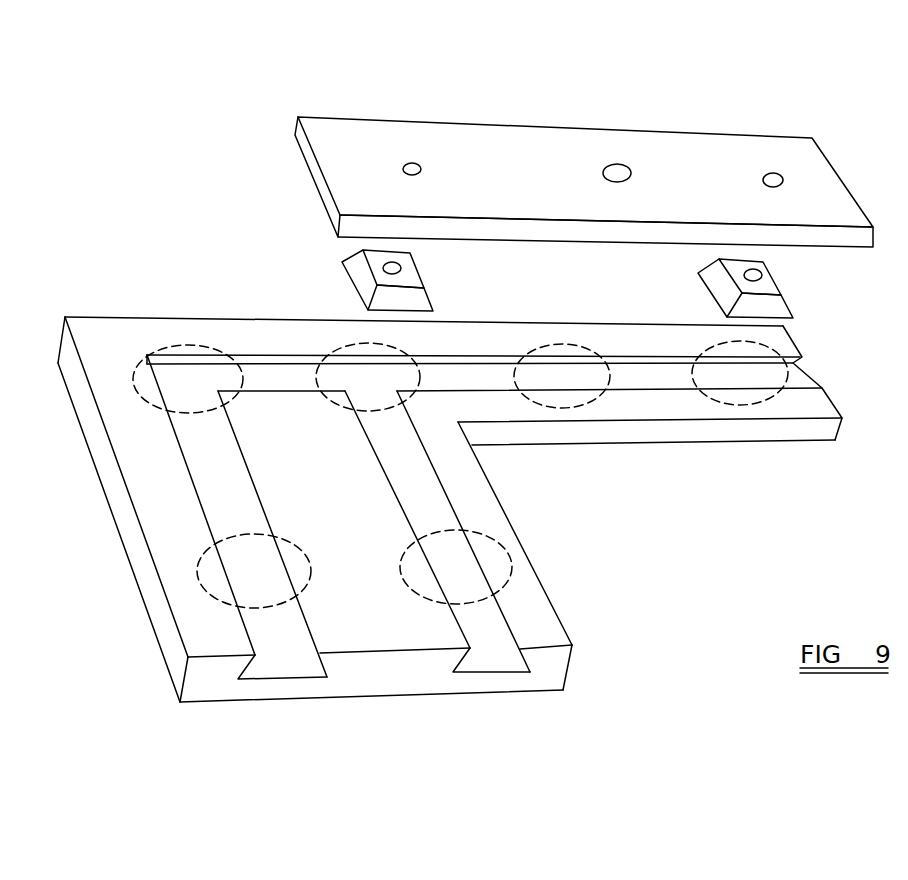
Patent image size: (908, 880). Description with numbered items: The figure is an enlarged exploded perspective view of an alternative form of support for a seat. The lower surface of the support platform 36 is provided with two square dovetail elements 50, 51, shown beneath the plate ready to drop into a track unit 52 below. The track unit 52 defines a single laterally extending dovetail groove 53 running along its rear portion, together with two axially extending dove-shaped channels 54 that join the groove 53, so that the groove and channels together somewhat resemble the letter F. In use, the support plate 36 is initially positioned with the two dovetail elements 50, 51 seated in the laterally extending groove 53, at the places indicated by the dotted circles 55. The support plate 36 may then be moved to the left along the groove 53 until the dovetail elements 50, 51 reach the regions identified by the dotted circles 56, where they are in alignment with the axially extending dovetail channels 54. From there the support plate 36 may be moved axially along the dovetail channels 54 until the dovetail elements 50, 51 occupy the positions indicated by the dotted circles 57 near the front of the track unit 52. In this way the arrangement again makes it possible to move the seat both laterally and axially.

The support platform 36 is at (495, 162).
The dovetail element 50 is at (338, 276).
The dovetail element 51 is at (777, 303).
The track unit 52 is at (528, 610).
The laterally extending dovetail groove 53 is at (263, 370).
The axially extending dovetail channels 54 is at (215, 458).
The dotted circles 55 is at (600, 393).
The dotted circles 56 is at (178, 390).
The dotted circles 57 is at (277, 608).